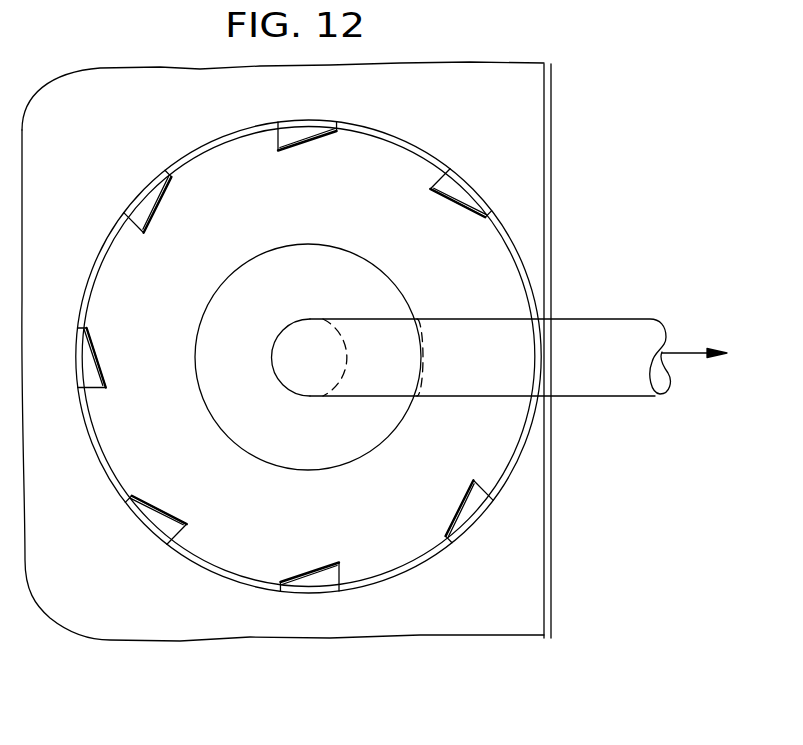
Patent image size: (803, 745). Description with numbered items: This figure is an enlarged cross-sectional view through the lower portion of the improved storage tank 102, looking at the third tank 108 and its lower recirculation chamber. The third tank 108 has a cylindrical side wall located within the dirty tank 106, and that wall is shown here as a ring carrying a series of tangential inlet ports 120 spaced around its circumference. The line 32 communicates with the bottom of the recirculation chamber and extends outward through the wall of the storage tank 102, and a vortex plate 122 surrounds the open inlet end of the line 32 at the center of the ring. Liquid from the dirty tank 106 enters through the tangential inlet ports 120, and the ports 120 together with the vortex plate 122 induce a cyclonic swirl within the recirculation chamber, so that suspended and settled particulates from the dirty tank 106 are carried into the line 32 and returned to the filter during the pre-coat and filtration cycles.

The line 32 is at (473, 322).
The storage tank 102 is at (178, 646).
The dirty tank 106 is at (117, 608).
The third tank 108 is at (88, 459).
The tangential inlet ports 120 is at (435, 188).
The vortex plate 122 is at (337, 448).